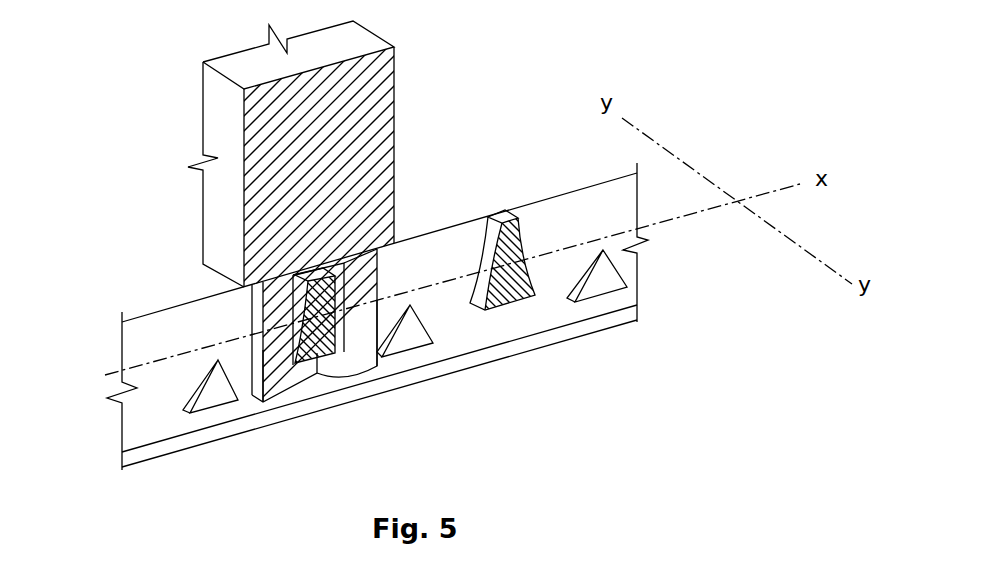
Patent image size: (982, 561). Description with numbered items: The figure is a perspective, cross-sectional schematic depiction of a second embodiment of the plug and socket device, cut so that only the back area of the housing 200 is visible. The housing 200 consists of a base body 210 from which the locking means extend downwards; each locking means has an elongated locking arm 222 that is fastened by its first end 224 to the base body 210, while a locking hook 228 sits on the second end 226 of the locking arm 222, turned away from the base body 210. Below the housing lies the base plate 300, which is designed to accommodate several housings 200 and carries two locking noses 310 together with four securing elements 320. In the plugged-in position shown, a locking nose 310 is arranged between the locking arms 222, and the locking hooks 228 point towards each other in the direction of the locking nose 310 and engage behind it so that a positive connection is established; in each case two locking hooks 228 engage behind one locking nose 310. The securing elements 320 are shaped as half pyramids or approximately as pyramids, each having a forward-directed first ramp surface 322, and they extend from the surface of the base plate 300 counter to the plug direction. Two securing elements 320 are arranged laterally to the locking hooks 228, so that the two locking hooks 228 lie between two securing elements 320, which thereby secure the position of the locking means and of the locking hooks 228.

The housing 200 is at (310, 244).
The base body 210 is at (378, 87).
The locking arm 222 is at (278, 300).
The first end 224 is at (360, 260).
The second end 226 is at (362, 350).
The locking hook 228 is at (277, 380).
The base plate 300 is at (602, 200).
The locking nose 310 is at (512, 235).
The securing element 320 is at (413, 354).
The first ramp surface 322 is at (218, 390).